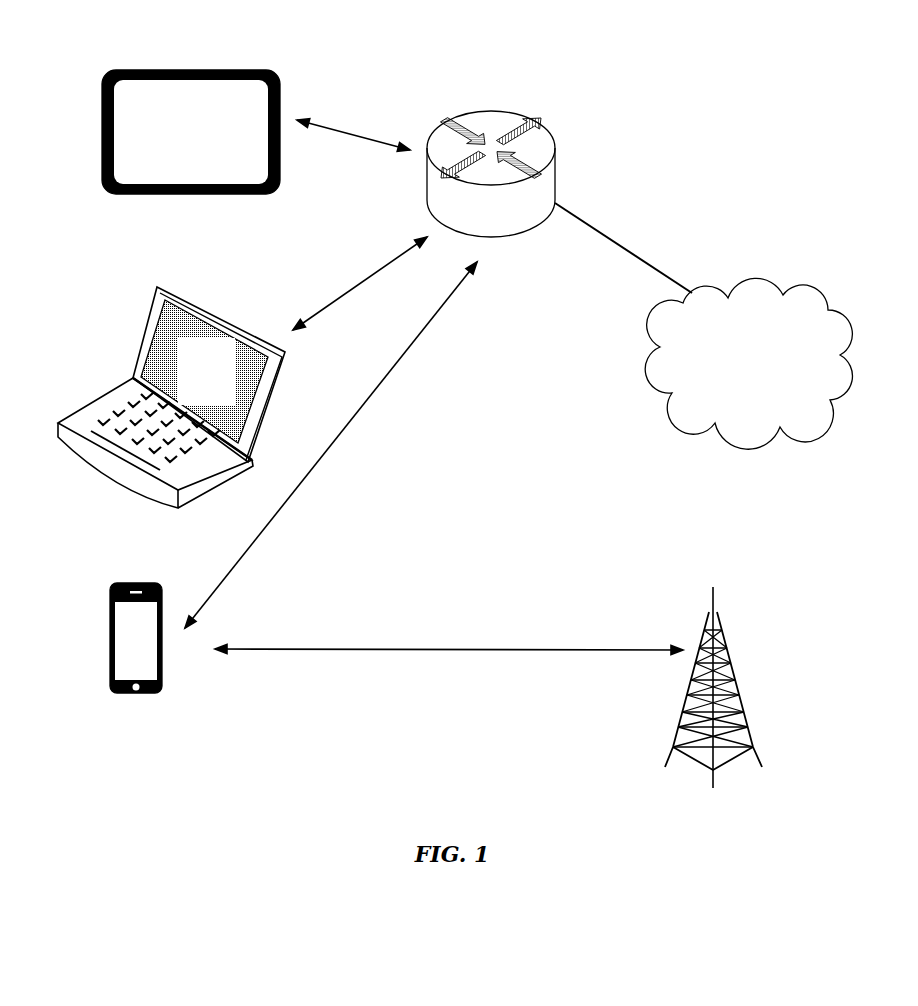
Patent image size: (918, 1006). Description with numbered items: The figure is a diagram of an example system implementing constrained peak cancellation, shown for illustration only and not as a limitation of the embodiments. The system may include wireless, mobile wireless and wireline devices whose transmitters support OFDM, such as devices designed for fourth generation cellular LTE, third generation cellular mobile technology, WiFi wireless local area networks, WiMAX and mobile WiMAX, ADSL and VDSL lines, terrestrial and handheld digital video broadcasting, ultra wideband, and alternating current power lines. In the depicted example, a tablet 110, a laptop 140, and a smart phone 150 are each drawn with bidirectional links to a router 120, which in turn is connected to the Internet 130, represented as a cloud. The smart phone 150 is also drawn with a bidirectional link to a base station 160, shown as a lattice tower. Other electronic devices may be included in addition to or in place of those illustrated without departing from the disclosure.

The tablet 110 is at (195, 70).
The router 120 is at (488, 110).
The Internet 130 is at (748, 363).
The laptop 140 is at (89, 402).
The smart phone 150 is at (110, 632).
The base station 160 is at (728, 668).